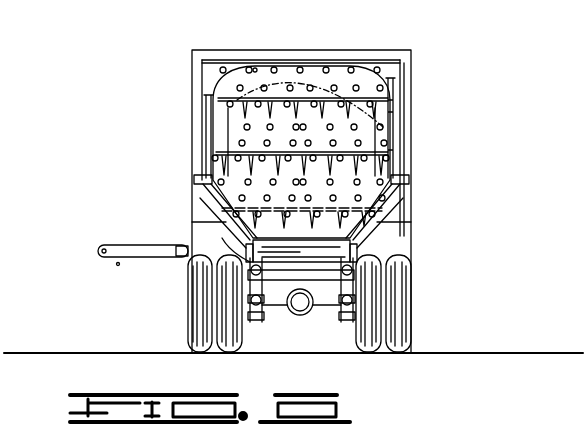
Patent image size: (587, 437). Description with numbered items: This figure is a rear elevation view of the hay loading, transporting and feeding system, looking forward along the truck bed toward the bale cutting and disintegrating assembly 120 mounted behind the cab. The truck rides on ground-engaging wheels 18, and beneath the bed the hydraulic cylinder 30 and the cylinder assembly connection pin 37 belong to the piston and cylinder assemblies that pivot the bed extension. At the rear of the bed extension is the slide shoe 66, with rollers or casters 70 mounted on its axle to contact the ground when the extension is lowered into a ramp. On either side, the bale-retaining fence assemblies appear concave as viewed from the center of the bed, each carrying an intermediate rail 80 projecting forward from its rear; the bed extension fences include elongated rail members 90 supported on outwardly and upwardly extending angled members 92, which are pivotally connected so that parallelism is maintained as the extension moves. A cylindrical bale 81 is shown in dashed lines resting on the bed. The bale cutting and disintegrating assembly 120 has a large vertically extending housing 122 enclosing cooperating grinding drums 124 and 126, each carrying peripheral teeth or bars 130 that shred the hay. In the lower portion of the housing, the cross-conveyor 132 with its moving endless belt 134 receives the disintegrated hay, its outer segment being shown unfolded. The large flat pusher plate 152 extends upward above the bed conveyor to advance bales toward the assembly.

The ground-engaging wheels 18 is at (200, 312).
The cylinder 30 is at (263, 285).
The cylinder assembly connection pin 37 is at (300, 315).
The slide shoe 66 is at (336, 241).
The rollers or casters 70 is at (238, 256).
The intermediate rail 80 is at (218, 208).
The cylindrical bale 81 is at (253, 68).
The elongated rail members 90 is at (200, 177).
The angled members 92 is at (198, 186).
The bale cutting and disintegrating assembly 120 is at (352, 50).
The housing 122 is at (406, 80).
The grinding drum 124 is at (200, 77).
The grinding drum 126 is at (395, 131).
The teeth or bars 130 is at (250, 66).
The cross-conveyor 132 is at (118, 264).
The endless belt 134 is at (143, 246).
The pusher plate 152 is at (222, 126).